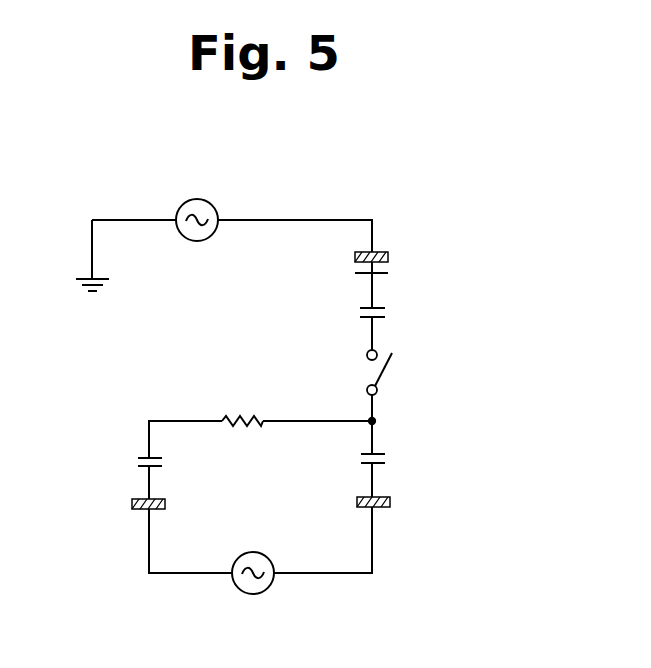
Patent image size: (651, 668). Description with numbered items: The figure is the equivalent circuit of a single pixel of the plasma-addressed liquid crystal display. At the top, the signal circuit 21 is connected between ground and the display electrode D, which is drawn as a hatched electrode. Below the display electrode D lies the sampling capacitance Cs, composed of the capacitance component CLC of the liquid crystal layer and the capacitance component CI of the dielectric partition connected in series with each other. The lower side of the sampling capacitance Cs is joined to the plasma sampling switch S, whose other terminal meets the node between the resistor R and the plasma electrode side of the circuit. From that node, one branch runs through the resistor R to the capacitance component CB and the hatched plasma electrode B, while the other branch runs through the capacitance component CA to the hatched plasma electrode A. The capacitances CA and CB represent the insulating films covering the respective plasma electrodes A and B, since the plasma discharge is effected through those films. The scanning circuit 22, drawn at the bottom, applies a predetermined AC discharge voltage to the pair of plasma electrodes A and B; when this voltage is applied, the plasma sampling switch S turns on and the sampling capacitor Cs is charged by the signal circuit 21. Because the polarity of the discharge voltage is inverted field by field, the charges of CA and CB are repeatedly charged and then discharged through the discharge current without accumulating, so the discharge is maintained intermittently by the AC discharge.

The signal circuit 21 is at (197, 199).
The scanning circuit 22 is at (262, 592).
The display electrode D is at (388, 256).
The capacitance component of the liquid crystal layer CLC is at (407, 283).
The capacitance component of the dielectric partition CI is at (452, 293).
The sampling capacitance Cs is at (455, 281).
The plasma sampling switch S is at (390, 385).
The resistor R is at (242, 403).
The capacitance component of the insulating film on electrode B CB is at (124, 464).
The plasma electrode B is at (132, 504).
The capacitance component of the insulating film on electrode A CA is at (395, 458).
The plasma electrode A is at (390, 503).